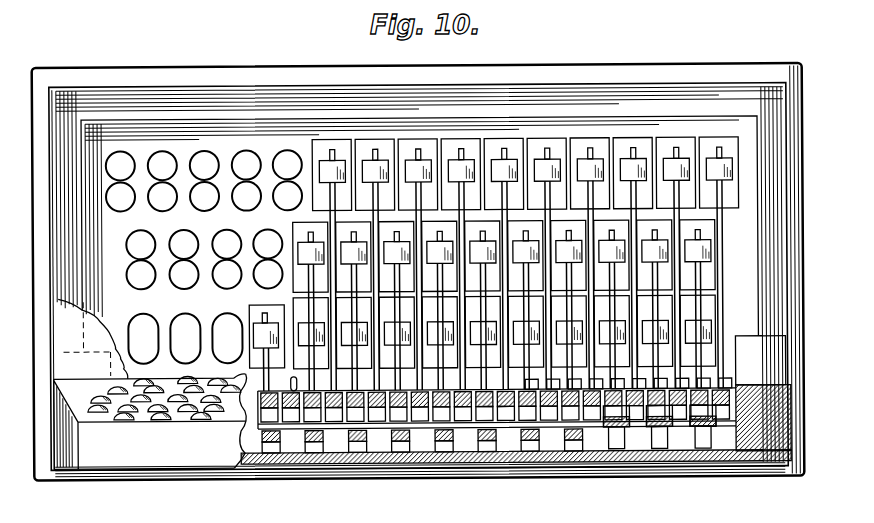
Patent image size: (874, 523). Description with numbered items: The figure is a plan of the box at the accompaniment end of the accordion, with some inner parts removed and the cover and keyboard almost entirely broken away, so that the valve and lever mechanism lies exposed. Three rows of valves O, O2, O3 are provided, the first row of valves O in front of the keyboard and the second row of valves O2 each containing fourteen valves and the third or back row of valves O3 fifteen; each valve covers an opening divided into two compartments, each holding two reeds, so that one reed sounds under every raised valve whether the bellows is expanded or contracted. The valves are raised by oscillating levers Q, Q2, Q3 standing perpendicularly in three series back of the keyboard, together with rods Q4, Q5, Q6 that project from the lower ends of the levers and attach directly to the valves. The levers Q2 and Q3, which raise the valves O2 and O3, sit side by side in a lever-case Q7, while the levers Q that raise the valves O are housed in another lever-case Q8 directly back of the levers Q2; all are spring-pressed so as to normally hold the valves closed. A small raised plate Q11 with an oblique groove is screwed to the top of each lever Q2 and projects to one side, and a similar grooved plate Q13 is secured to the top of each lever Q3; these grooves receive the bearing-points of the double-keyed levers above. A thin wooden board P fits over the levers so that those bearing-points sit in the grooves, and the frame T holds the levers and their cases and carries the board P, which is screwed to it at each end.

The board P is at (72, 383).
The oscillating lever Q is at (705, 433).
The oscillating lever Q2 is at (703, 397).
The oscillating lever Q3 is at (735, 397).
The rod Q4 is at (266, 378).
The rod Q5 is at (296, 295).
The rod Q6 is at (299, 221).
The lever-case Q7 is at (515, 410).
The lever-case Q8 is at (560, 440).
The plate Q11 is at (721, 374).
The plate Q13 is at (739, 385).
The valve O is at (710, 305).
The valve O2 is at (708, 268).
The valve O3 is at (732, 187).
The frame T is at (597, 458).